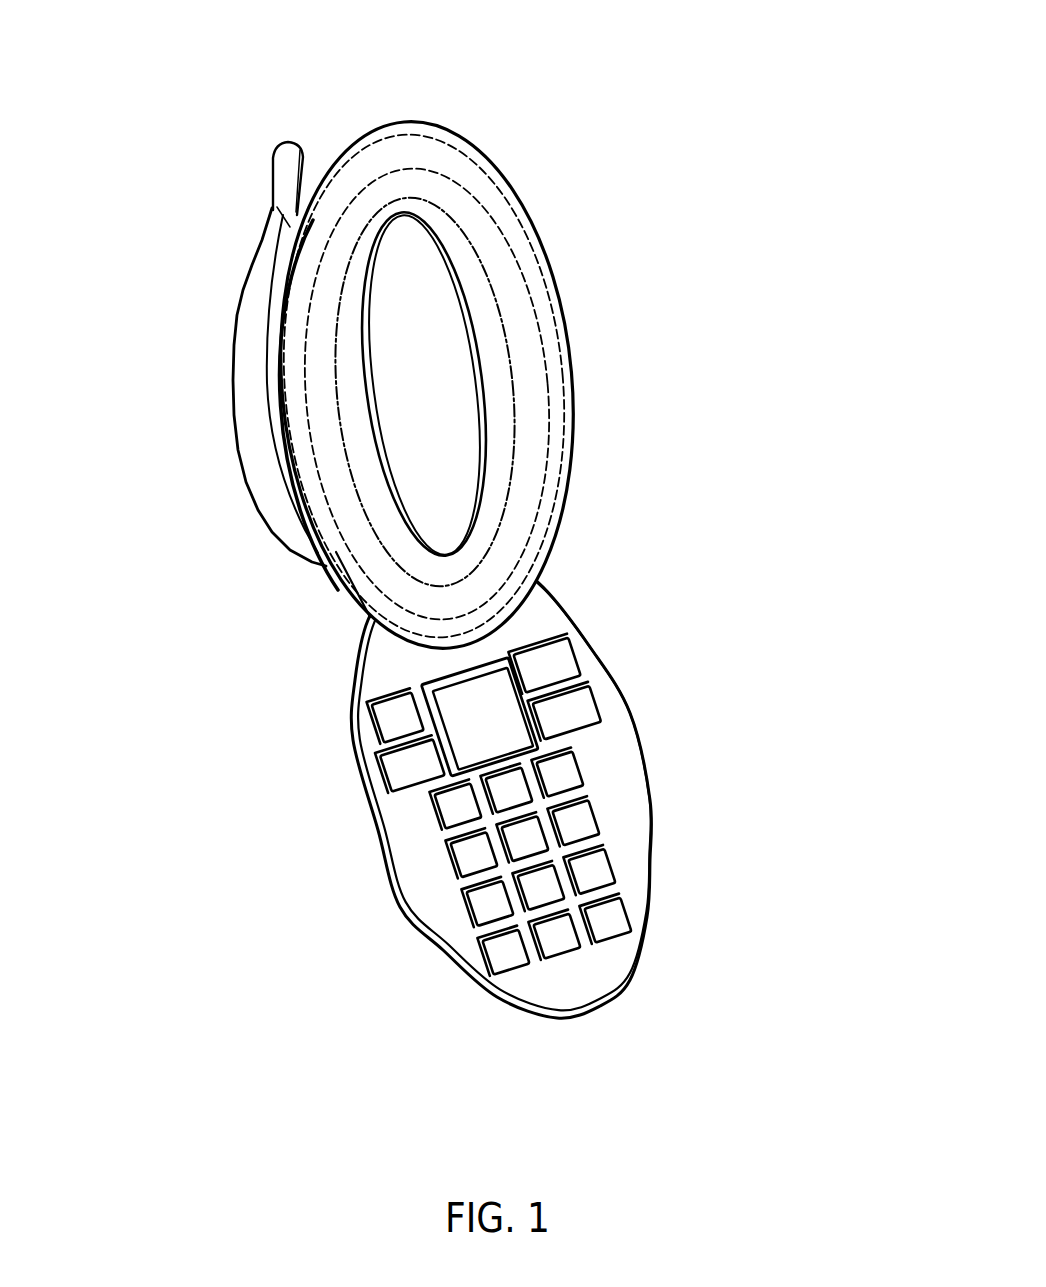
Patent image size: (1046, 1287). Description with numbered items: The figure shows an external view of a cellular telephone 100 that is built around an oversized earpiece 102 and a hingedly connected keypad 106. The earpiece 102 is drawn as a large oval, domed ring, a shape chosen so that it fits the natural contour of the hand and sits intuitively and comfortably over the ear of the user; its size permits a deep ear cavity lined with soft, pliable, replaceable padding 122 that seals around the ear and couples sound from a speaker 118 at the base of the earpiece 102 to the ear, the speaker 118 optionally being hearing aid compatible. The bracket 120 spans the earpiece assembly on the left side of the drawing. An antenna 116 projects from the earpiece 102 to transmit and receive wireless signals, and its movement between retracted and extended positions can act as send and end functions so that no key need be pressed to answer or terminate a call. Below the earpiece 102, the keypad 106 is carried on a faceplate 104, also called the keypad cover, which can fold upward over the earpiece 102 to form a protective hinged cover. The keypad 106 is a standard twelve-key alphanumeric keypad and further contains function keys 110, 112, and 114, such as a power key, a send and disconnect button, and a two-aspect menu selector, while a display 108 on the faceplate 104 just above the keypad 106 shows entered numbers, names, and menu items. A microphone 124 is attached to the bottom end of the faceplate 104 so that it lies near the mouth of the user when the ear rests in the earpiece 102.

The cellular telephone 100 is at (457, 98).
The earpiece 102 is at (530, 236).
The faceplate 104 is at (653, 845).
The keypad 106 is at (436, 1003).
The display 108 is at (543, 622).
The function key 110 is at (385, 717).
The function key 112 is at (560, 661).
The function key 114 is at (500, 717).
The antenna 116 is at (270, 172).
The speaker 118 is at (433, 378).
The upper housing assembly 120 is at (216, 215).
The padding 122 is at (572, 470).
The microphone 124 is at (607, 997).